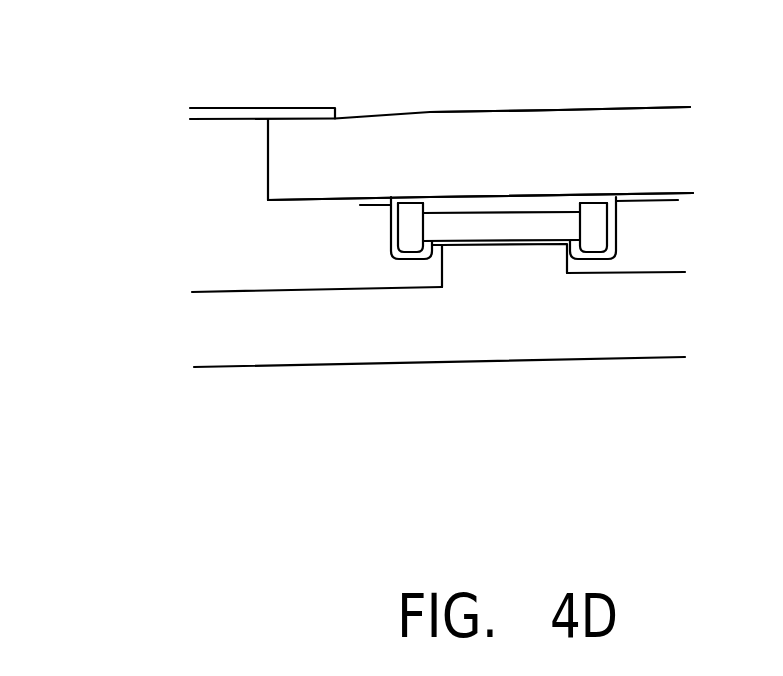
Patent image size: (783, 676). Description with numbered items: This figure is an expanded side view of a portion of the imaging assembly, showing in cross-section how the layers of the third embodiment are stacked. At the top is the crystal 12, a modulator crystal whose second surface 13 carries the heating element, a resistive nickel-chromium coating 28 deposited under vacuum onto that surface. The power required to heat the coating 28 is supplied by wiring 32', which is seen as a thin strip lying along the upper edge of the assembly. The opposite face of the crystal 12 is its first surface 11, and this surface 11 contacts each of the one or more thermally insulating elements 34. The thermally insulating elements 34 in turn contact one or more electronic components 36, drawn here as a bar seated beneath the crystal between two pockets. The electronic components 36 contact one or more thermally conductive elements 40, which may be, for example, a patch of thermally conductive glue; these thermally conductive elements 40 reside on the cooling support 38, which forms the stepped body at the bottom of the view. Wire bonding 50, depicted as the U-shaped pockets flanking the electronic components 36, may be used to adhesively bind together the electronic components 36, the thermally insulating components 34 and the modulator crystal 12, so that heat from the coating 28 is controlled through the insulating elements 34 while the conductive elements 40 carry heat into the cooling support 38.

The wiring 32' is at (235, 70).
The crystal 12 is at (410, 117).
The resistive nickel-chromium coating 28 is at (498, 112).
The first surface 11 is at (351, 197).
The second surface 13 is at (558, 112).
The thermally insulating element 34 is at (559, 197).
The wire bonding 50 is at (390, 238).
The electronic component 36 is at (477, 227).
The thermally conductive element 40 is at (530, 245).
The cooling support 38 is at (295, 333).